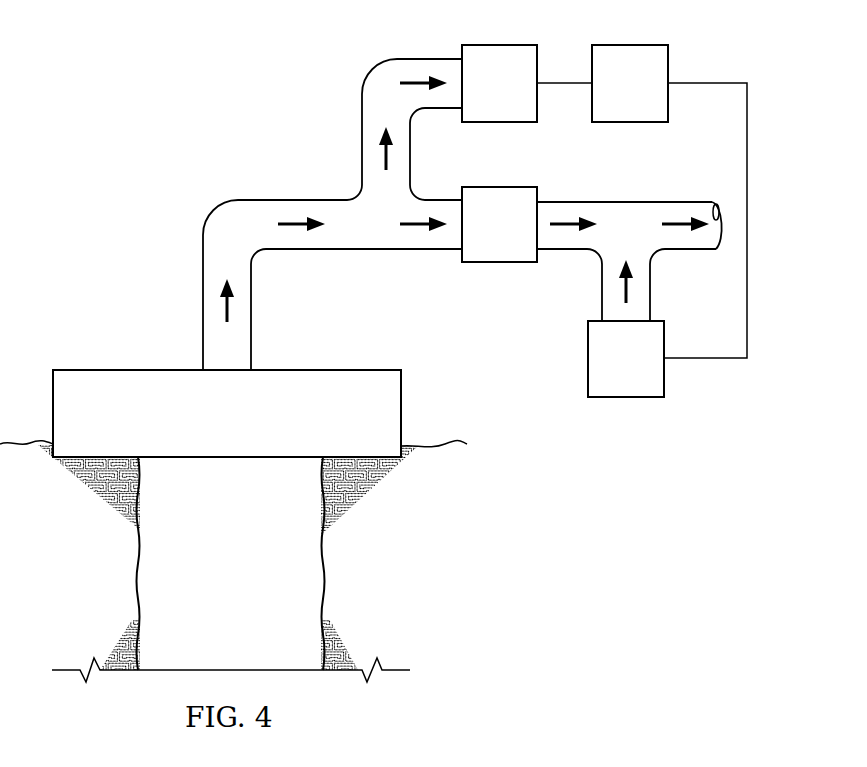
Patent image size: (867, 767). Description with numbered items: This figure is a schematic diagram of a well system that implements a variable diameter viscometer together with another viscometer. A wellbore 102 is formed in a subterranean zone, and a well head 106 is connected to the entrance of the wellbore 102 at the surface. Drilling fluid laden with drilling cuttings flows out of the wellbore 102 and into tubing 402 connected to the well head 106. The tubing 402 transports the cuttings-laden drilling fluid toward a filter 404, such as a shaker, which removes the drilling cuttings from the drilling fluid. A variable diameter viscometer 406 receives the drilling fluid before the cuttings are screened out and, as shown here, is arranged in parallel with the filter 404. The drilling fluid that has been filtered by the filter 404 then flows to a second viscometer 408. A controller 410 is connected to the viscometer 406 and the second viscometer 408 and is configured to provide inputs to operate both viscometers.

The wellbore 102 is at (323, 583).
The well head 106 is at (402, 392).
The tubing 402 is at (360, 249).
The filter 404 is at (481, 235).
The variable diameter viscometer 406 is at (481, 95).
The second viscometer 408 is at (607, 370).
The controller 410 is at (611, 95).